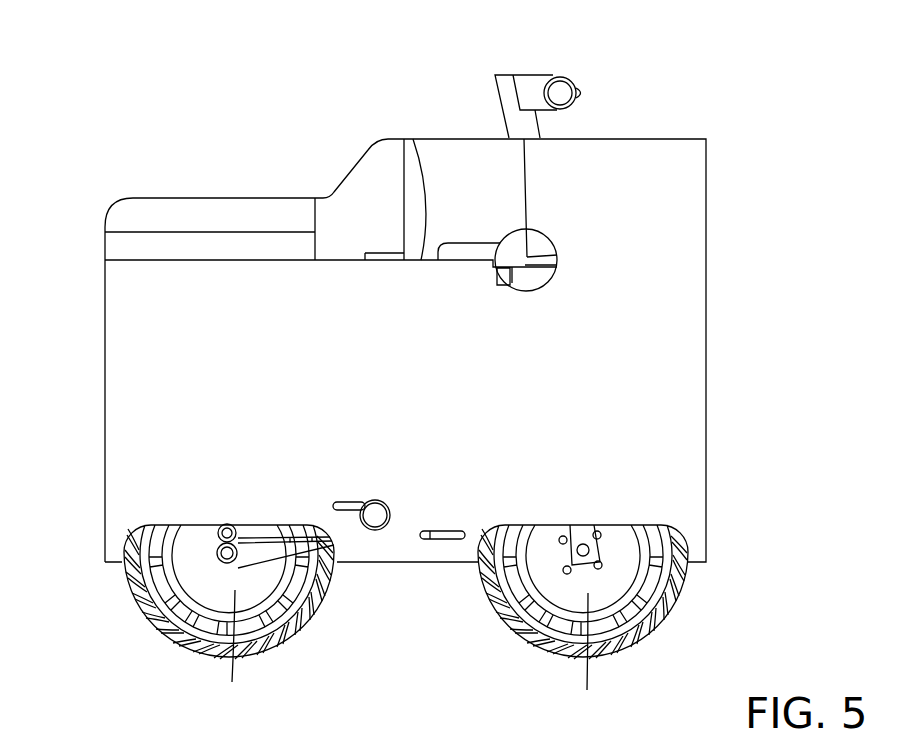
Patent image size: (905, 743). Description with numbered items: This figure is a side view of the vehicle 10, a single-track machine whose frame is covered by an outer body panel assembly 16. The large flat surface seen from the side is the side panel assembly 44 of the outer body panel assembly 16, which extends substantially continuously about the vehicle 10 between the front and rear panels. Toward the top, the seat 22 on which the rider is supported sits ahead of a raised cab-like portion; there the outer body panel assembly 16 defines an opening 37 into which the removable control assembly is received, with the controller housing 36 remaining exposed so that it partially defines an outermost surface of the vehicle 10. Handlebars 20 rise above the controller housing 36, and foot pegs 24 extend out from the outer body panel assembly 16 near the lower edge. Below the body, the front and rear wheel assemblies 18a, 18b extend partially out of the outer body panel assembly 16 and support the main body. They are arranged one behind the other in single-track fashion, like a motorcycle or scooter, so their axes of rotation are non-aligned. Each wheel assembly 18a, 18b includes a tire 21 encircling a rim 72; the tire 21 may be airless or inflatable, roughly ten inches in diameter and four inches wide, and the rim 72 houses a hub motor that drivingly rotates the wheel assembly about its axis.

The vehicle 10 is at (128, 142).
The outer body panel assembly 16 is at (642, 182).
The front wheel assembly 18a is at (668, 595).
The rear wheel assembly 18b is at (140, 612).
The handlebars 20 is at (528, 88).
The tire 21 is at (282, 643).
The seat 22 is at (205, 207).
The foot pegs 24 is at (379, 531).
The controller housing 36 is at (448, 157).
The opening 37 is at (426, 185).
The side panel assembly 44 is at (373, 393).
The rim 72 is at (414, 658).